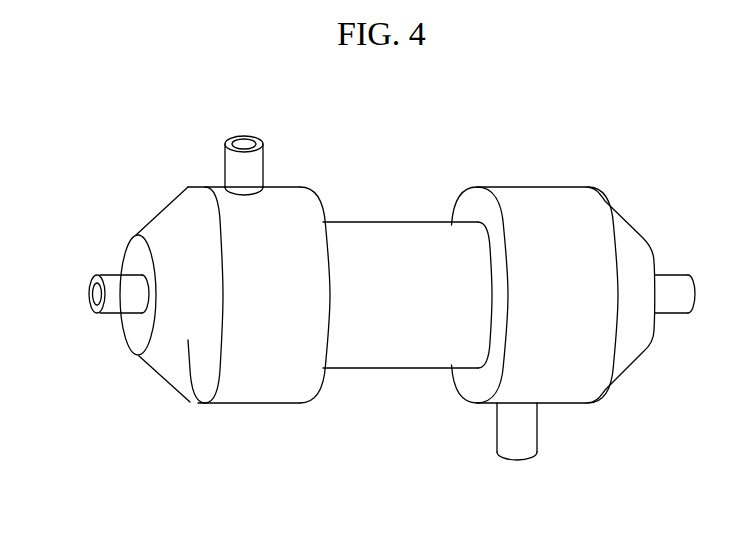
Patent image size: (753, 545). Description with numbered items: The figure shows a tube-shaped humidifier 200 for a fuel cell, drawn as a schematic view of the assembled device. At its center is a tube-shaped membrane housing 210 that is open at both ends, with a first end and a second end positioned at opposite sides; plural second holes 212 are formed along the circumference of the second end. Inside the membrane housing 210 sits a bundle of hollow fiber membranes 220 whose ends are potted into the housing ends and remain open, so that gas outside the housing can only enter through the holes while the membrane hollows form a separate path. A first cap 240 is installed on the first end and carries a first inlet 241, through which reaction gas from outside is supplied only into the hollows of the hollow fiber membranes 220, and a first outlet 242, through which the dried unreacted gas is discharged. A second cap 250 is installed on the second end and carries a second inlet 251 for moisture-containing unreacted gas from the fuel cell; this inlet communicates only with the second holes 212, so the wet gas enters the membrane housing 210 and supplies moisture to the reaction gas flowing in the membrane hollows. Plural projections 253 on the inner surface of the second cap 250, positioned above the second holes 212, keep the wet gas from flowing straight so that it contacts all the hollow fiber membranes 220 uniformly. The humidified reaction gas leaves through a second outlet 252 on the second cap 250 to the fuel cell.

The tube-shaped humidifier 200 is at (570, 112).
The membrane housing 210 is at (382, 230).
The second holes 212 is at (248, 242).
The hollow fiber membranes 220 is at (197, 404).
The first cap 240 is at (567, 208).
The first inlet 241 is at (692, 312).
The first outlet 242 is at (517, 461).
The second cap 250 is at (158, 212).
The second inlet 251 is at (245, 146).
The second outlet 252 is at (88, 288).
The projections 253 is at (272, 342).